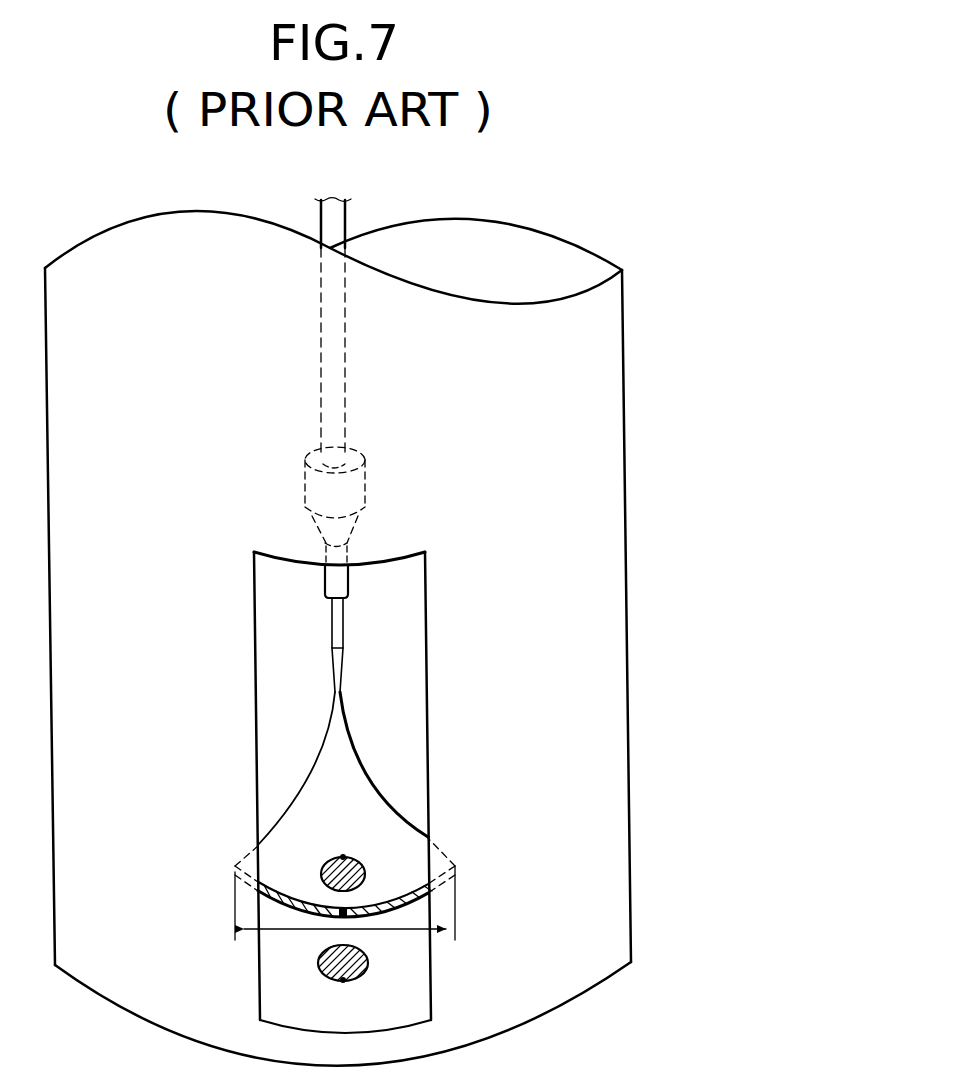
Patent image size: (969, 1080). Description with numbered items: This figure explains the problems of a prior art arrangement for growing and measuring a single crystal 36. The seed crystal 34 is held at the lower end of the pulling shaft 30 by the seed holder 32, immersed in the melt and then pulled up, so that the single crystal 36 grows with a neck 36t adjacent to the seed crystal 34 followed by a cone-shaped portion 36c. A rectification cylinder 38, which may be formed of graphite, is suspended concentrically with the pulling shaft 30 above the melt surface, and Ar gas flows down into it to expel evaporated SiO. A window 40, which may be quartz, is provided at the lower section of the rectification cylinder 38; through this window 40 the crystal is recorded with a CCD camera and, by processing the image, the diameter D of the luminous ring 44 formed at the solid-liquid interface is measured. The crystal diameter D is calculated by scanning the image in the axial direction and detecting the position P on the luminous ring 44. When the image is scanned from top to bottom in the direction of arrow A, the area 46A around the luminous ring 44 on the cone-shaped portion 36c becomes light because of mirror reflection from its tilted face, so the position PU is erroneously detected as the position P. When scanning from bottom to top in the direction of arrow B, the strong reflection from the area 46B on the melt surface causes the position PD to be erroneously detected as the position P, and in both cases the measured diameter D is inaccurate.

The pulling shaft 30 is at (346, 222).
The seed holder 32 is at (366, 494).
The seed crystal 34 is at (349, 614).
The single crystal 36 is at (317, 765).
The neck 36t is at (346, 684).
The cone-shaped portion 36c is at (367, 776).
The rectification cylinder 38 is at (629, 483).
The window 40 is at (413, 652).
The luminous ring 44 is at (389, 904).
The light area 46A is at (323, 874).
The light area 46B is at (322, 973).
The arrow A is at (342, 856).
The arrow B is at (343, 984).
The position P is at (348, 916).
The position PU is at (346, 856).
The position PD is at (350, 982).
The crystal diameter D is at (288, 930).